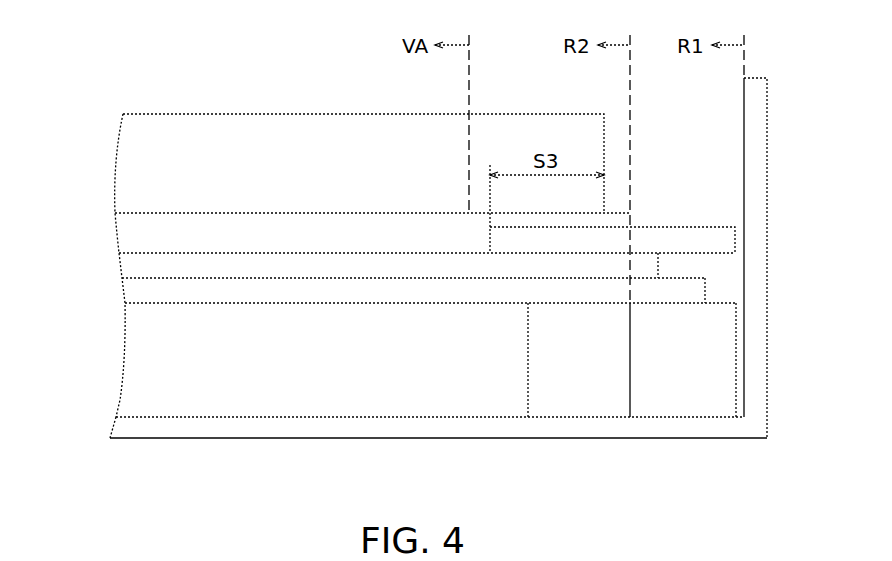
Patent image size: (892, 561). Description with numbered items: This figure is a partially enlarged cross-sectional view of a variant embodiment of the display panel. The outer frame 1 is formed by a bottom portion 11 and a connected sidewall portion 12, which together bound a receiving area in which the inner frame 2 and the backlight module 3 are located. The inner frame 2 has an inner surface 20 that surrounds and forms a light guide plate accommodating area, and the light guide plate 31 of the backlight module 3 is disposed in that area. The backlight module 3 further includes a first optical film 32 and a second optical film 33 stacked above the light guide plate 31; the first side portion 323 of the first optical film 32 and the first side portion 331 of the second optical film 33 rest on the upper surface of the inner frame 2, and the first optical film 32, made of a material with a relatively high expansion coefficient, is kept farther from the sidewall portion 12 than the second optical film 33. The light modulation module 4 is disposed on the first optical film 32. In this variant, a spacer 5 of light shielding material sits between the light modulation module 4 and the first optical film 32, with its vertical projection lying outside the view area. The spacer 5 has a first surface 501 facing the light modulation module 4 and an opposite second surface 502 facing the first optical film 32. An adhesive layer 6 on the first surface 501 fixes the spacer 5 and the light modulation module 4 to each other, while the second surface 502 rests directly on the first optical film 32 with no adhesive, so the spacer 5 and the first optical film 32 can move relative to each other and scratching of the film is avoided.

The outer frame 1 is at (768, 325).
The bottom portion 11 is at (503, 428).
The sidewall portion 12 is at (755, 353).
The inner frame 2 is at (660, 380).
The inner surface 20 is at (630, 368).
The backlight module 3 is at (50, 413).
The light guide plate 31 is at (379, 395).
The first optical film 32 is at (643, 263).
The second optical film 33 is at (688, 292).
The first side portion of the first optical film 323 is at (637, 265).
The first side portion of the second optical film 331 is at (679, 290).
The light modulation module 4 is at (365, 125).
The spacer 5 is at (503, 243).
The first surface 501 is at (703, 227).
The second surface 502 is at (720, 252).
The adhesive layer 6 is at (543, 220).